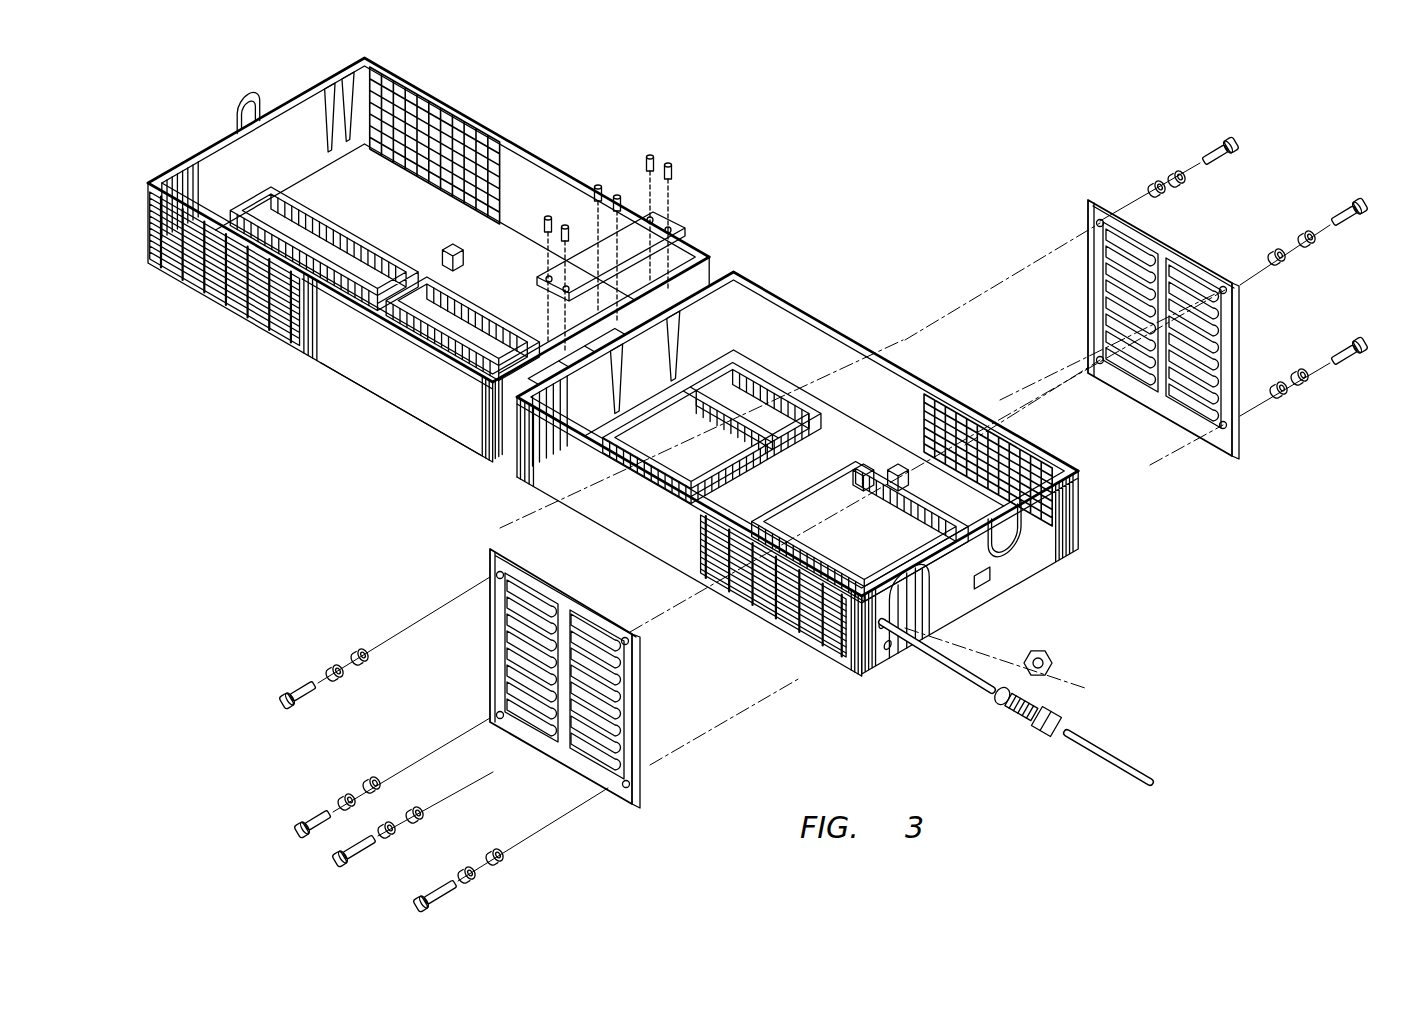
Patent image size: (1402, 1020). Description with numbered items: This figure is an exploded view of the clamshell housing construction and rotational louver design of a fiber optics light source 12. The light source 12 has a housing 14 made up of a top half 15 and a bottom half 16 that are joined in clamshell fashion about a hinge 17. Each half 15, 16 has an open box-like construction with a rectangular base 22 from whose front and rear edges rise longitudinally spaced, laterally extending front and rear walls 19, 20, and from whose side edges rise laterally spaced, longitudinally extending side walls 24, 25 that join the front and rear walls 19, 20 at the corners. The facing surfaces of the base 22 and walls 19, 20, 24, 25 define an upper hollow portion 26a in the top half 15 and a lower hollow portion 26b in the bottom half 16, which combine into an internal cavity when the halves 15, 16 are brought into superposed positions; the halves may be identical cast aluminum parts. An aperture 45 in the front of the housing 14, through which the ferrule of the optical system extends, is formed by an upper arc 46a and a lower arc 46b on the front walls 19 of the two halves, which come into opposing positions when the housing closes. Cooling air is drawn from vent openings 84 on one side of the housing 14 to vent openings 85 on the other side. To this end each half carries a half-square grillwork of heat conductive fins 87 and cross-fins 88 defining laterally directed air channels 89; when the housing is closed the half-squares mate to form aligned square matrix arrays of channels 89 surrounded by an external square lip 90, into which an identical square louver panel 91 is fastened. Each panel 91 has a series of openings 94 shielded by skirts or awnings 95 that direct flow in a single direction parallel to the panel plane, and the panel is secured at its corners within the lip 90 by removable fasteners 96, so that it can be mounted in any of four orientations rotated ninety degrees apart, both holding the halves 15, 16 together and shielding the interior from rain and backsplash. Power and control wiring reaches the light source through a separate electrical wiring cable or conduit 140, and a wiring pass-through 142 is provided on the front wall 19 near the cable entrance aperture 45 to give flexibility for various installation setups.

The fiber optics light source 12 is at (911, 218).
The housing 14 is at (768, 262).
The top half 15 is at (587, 357).
The bottom half 16 is at (796, 454).
The hinge 17 is at (678, 210).
The front wall 19 is at (177, 144).
The rear wall 20 is at (593, 358).
The base 22 is at (366, 226).
The side wall 24 is at (537, 158).
The side wall 25 is at (820, 323).
The upper hollow portion 26a is at (362, 97).
The lower hollow portion 26b is at (1006, 435).
The aperture 45 is at (1007, 553).
The upper arc 46a is at (238, 103).
The lower arc 46b is at (982, 578).
The vent openings 84 is at (935, 428).
The vent openings 85 is at (800, 642).
The fins 87 is at (765, 622).
The cross-fins 88 is at (768, 602).
The air channels 89 is at (961, 480).
The square lip 90 is at (1065, 458).
The louver panel 91 is at (566, 678).
The openings 94 is at (1112, 302).
The skirts or awnings 95 is at (595, 660).
The removable fasteners 96 is at (273, 700).
The electrical wiring cable or conduit 140 is at (1090, 741).
The wiring pass-through 142 is at (897, 627).